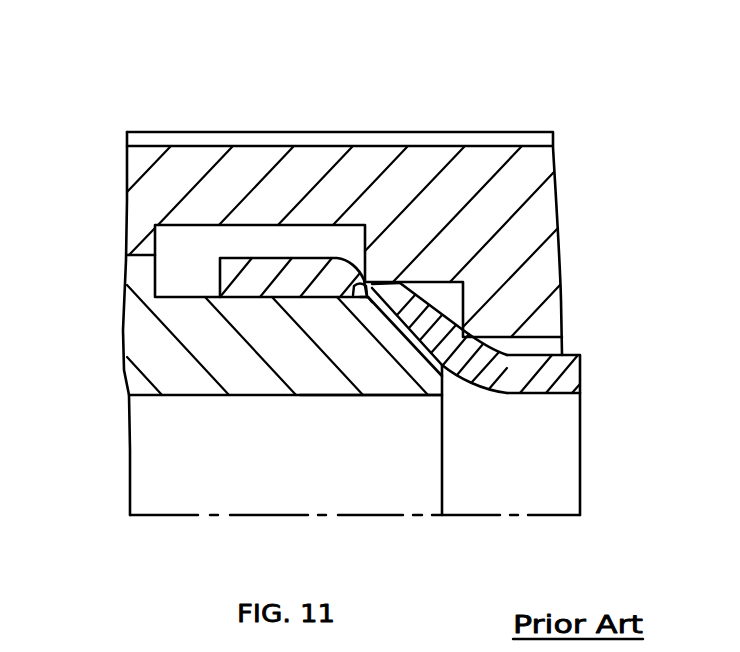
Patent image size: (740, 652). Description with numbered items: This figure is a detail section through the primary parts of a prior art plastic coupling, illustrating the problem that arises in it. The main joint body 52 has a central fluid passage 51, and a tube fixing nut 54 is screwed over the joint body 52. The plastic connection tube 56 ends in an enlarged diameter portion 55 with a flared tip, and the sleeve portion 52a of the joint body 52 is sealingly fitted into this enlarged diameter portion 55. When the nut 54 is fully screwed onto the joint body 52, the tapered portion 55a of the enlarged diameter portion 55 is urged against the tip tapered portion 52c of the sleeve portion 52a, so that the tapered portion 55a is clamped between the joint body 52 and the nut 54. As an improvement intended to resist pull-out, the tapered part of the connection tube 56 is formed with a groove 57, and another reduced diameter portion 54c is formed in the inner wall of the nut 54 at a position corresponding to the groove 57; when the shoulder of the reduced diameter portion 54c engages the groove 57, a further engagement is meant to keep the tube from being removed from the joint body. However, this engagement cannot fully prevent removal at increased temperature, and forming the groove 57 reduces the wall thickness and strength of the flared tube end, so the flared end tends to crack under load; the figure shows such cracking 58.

The fluid passage 51 is at (245, 473).
The main joint body 52 is at (147, 336).
The sleeve portion 52a is at (385, 375).
The tip tapered portion 52c is at (430, 310).
The tube fixing nut 54 is at (498, 163).
The reduced diameter portion 54c is at (373, 278).
The enlarged diameter portion 55 is at (272, 266).
The tapered portion 55a is at (402, 302).
The connection tube 56 is at (582, 378).
The groove 57 is at (387, 278).
The cracking 58 is at (367, 302).